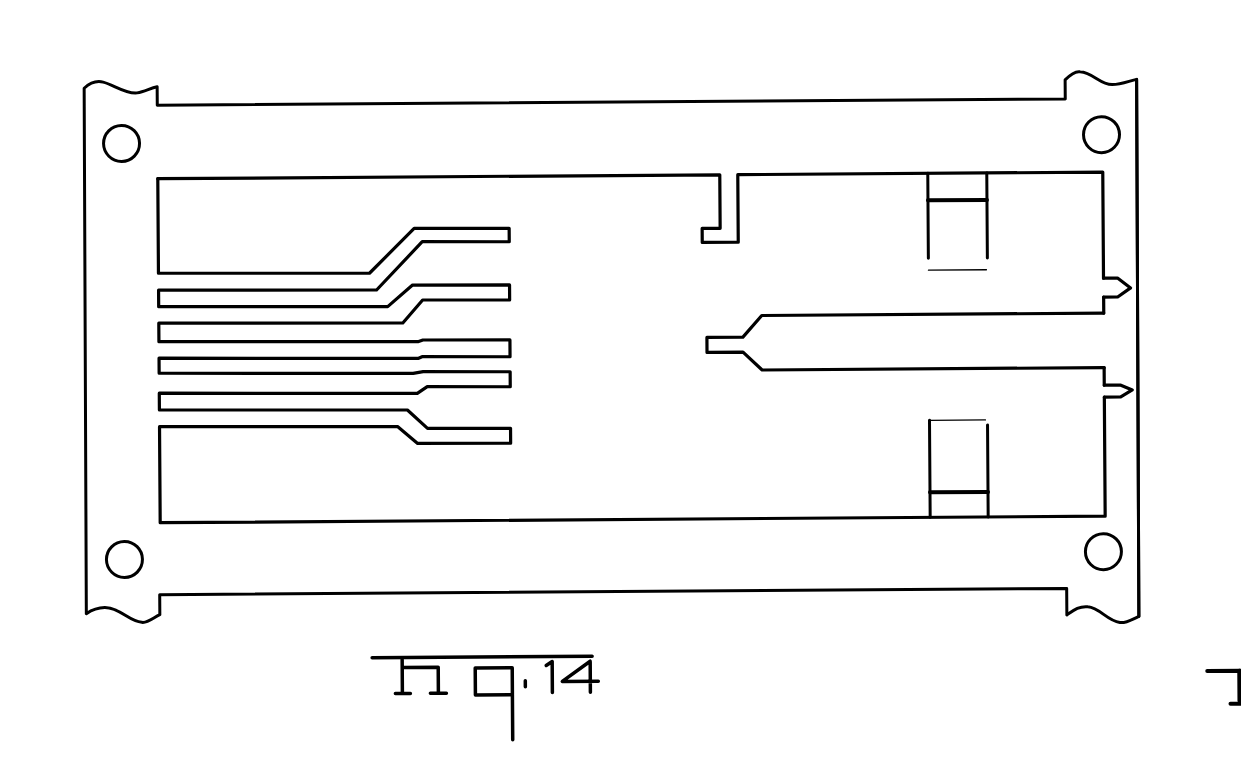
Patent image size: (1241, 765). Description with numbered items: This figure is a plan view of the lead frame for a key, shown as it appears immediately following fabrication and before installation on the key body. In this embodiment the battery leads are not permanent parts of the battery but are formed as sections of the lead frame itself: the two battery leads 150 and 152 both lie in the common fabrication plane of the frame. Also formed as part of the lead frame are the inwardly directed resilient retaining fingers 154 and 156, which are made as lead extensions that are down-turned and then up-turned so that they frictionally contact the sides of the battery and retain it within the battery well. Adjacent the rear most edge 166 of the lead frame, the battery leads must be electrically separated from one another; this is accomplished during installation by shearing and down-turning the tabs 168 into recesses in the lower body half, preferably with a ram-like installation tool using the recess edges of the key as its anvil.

The battery lead 150 is at (663, 127).
The battery lead 152 is at (810, 330).
The resilient retaining finger 154 is at (929, 192).
The resilient retaining finger 156 is at (931, 502).
The rear most edge 166 is at (1142, 157).
The tabs 168 is at (1106, 282).